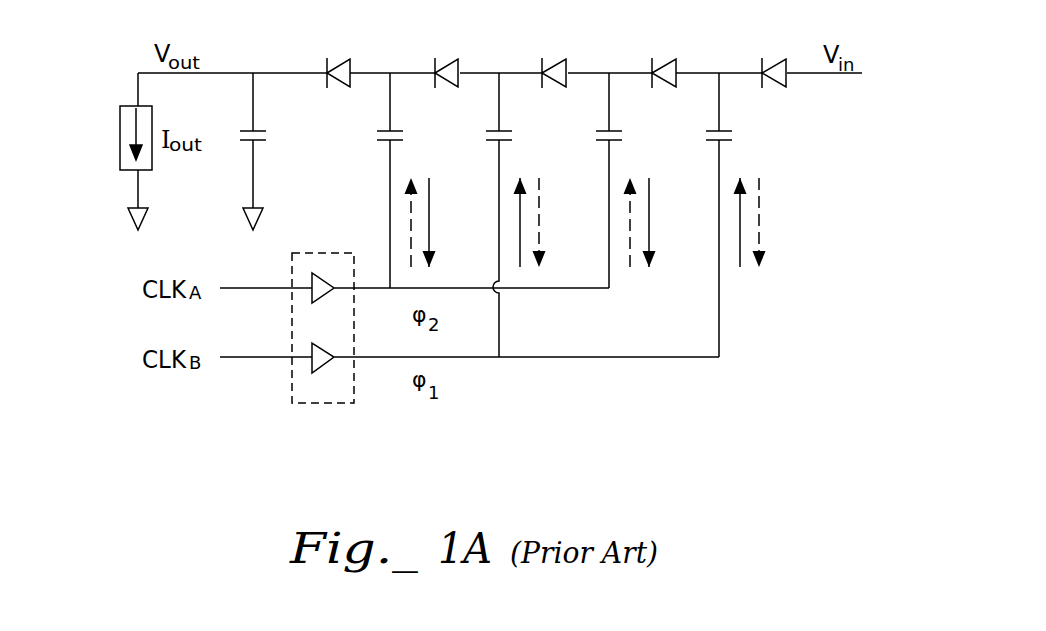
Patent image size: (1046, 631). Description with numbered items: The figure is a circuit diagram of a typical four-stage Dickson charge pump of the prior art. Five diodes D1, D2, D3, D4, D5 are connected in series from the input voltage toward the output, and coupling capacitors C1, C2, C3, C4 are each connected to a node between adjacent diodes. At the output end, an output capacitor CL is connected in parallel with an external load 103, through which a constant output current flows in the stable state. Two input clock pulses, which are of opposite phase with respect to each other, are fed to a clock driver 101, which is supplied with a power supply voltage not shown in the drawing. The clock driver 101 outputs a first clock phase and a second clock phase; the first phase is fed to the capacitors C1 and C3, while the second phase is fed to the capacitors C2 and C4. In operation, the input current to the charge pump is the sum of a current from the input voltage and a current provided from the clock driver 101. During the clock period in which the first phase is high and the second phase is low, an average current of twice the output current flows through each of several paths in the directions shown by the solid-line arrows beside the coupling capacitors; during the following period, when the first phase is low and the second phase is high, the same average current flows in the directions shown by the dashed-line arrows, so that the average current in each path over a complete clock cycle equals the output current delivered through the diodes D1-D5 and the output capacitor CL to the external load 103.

The clock driver 101 is at (292, 394).
The external load 103 is at (120, 120).
The diode D1 is at (775, 52).
The diode D2 is at (665, 52).
The diode D3 is at (556, 52).
The diode D4 is at (446, 52).
The diode D5 is at (338, 52).
The coupling capacitor C1 is at (738, 215).
The coupling capacitor C2 is at (628, 180).
The coupling capacitor C3 is at (517, 215).
The coupling capacitor C4 is at (408, 180).
The output capacitor CL is at (271, 151).